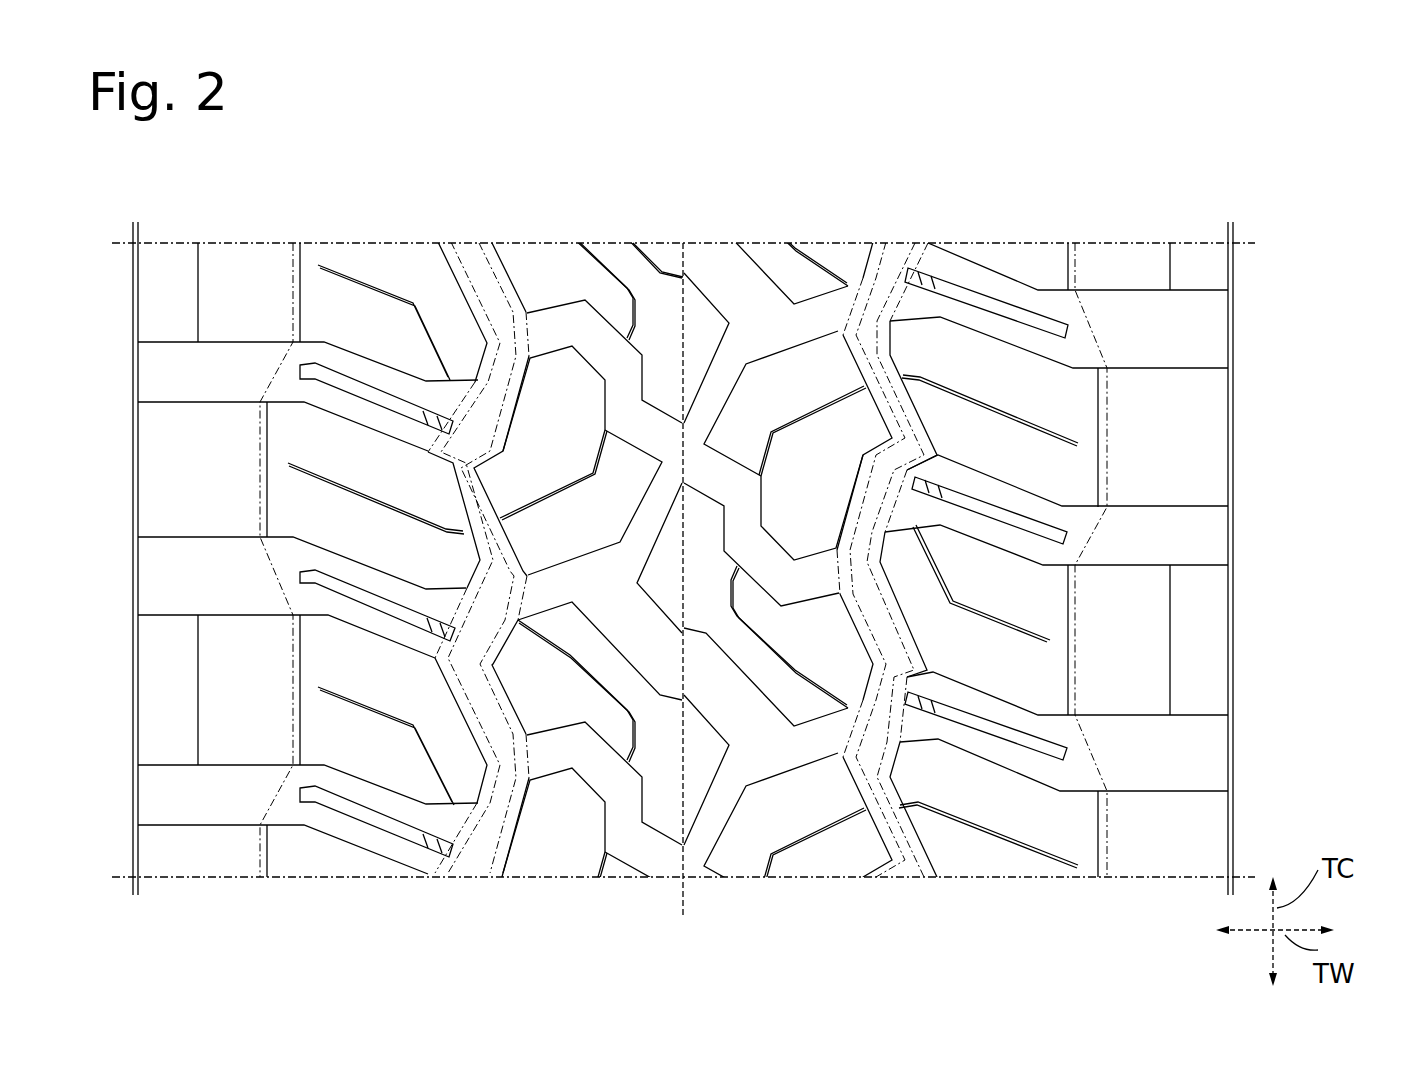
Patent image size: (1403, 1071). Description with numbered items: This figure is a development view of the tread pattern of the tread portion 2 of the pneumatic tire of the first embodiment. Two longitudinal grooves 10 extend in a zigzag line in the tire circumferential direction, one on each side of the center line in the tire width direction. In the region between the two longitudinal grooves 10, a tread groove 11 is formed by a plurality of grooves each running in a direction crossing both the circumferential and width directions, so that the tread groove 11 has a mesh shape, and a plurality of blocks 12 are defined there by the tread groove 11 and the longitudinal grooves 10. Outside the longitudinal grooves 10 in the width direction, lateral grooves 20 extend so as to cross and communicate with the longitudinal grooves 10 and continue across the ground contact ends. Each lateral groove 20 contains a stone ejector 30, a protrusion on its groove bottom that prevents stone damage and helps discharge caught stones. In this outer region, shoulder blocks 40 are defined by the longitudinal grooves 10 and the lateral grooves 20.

The tread portion 2 is at (1110, 218).
The longitudinal groove 10 is at (682, 559).
The tread groove 11 is at (735, 268).
The block 12 is at (567, 255).
The lateral groove 20 is at (683, 558).
The stone ejector 30 is at (684, 562).
The shoulder block 40 is at (684, 560).